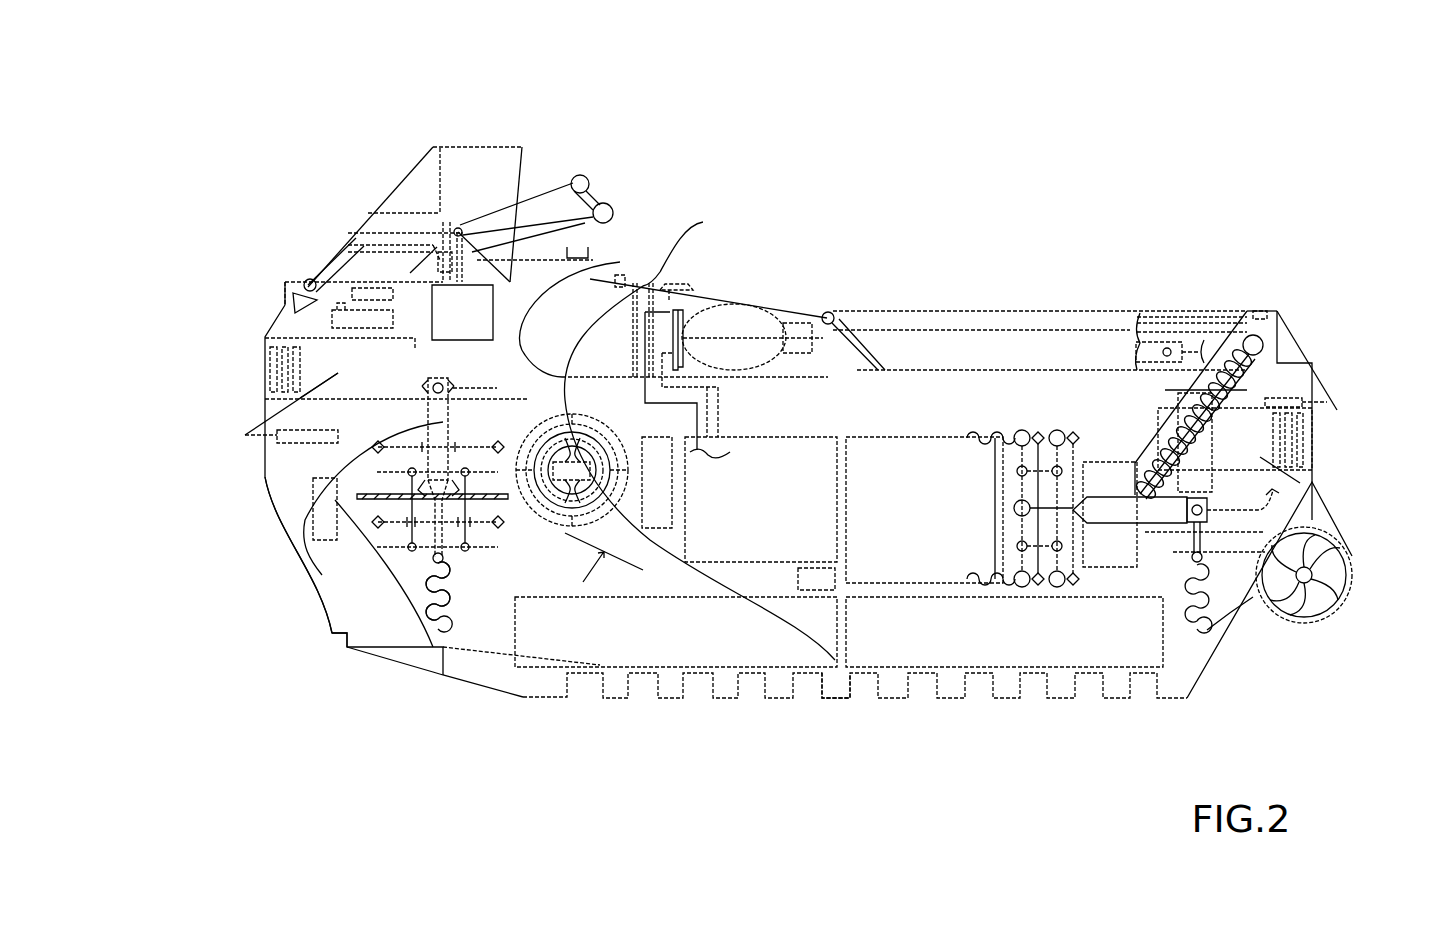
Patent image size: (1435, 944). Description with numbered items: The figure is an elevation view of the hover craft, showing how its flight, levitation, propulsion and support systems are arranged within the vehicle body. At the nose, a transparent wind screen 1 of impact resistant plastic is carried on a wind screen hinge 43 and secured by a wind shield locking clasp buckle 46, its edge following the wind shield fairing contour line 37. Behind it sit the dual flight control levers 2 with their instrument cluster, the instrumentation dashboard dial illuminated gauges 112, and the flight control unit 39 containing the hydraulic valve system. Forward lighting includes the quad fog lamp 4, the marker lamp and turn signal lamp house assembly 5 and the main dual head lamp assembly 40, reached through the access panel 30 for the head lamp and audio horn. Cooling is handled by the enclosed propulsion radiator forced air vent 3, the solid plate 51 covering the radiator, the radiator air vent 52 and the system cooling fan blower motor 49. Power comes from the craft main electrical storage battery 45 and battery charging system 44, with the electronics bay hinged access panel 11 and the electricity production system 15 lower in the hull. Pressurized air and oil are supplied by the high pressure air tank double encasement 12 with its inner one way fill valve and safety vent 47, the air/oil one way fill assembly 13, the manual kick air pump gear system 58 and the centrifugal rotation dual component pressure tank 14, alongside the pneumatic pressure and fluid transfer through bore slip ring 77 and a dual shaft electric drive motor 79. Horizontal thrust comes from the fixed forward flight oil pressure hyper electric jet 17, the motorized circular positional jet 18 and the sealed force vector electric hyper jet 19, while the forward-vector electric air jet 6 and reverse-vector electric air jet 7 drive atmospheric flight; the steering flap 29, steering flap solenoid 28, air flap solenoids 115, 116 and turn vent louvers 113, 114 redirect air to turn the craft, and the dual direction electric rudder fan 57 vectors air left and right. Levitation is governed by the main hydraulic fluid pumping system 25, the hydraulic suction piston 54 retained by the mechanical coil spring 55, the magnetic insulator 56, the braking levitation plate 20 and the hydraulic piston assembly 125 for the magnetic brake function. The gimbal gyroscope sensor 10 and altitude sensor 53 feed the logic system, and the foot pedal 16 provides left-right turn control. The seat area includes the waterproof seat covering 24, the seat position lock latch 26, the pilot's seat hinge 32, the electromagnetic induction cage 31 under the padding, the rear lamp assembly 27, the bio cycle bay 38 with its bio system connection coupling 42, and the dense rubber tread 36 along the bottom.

The transparent wind screen 1 is at (422, 157).
The dual flight control levers 2 is at (587, 178).
The enclosed propulsion radiator forced air vent 3 is at (355, 290).
The quad fog lamp 4 is at (285, 298).
The marker lamp and turn signal indication lamp house assembly 5 is at (297, 301).
The forward-vector electric air jet 6 is at (338, 373).
The reverse-vector electric air jet 7 is at (1203, 463).
The gimbal gyroscope sensor 10 is at (535, 518).
The electronics bay hinged access panel 11 is at (670, 520).
The high pressure air tank double encasement 12 is at (699, 436).
The air/oil one way fill assembly 13 is at (700, 293).
The centrifugal rotation dual component pressure tank 14 is at (745, 335).
The electricity production system 15 is at (753, 545).
The foot pedal 16 is at (598, 558).
The fixed position horizontal forward flight sealed oil pressure hyper electric jet 17 is at (598, 652).
The motorized circular positional sealed oil pressure hyper electric jet 18 is at (936, 645).
The sealed force vector electric hyper jet 19 is at (945, 440).
The braking levitation plate 20 is at (1032, 565).
The seat covering 24 is at (1025, 330).
The levitation main hydraulic fluid pumping system 25 is at (1152, 350).
The seat position lock latch and open handle 26 is at (1260, 310).
The rear turn signal, tail lamp and brake lamp assembly 27 is at (1287, 337).
The air flight steering flap solenoid 28 is at (1331, 406).
The steering flap 29 is at (243, 433).
The access panel 30 is at (327, 598).
The electromagnetic induction cage 31 is at (917, 338).
The pilot's seat hinge 32 is at (835, 317).
The dense rubber tread 36 is at (834, 700).
The wind shield fairing contour line 37 is at (600, 275).
The pilot's bio cycle bay 38 is at (1102, 557).
The flight control unit 39 is at (604, 280).
The main dual head lamp assembly 40 is at (295, 500).
The bio system connection coupling 42 is at (1255, 340).
The wind screen hinge 43 is at (305, 282).
The battery charging system 44 is at (358, 293).
The craft main electrical storage battery 45 is at (340, 320).
The wind shield locking clasp buckle 46 is at (585, 272).
The inner high-pressure tank one way fill valve 47 is at (616, 301).
The system cooling fan blower motor 49 is at (482, 255).
The solid plate 51 is at (358, 290).
The radiator air vent 52 is at (402, 260).
The altitude sensor 53 is at (333, 635).
The levitation system hydraulic suction piston 54 is at (313, 518).
The retention mechanical coil spring 55 is at (427, 610).
The magnetic insulator 56 is at (312, 562).
The dual direction electric air flight rudder fan 57 is at (1330, 585).
The manual kick air pump gear system 58 is at (808, 582).
The pneumatic pressure and fluid transfer through bore slip ring 77 is at (738, 323).
The dual shaft electric drive motor 79 is at (793, 335).
The instrumentation dashboard dial illuminated gauges 112 is at (448, 253).
The turn vent louvers 113 is at (273, 365).
The turn vent louvers 114 is at (1298, 427).
The air flap solenoid 115 is at (1293, 398).
The air flap solenoid 116 is at (287, 437).
The hydraulic piston assembly 125 is at (1130, 517).